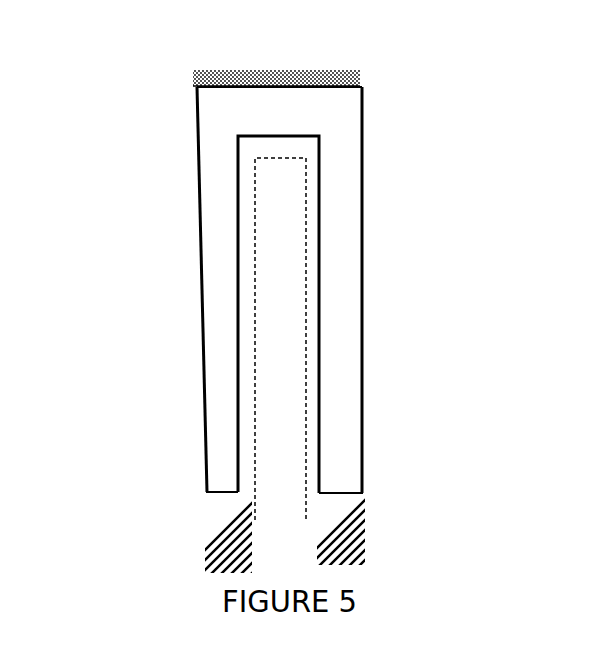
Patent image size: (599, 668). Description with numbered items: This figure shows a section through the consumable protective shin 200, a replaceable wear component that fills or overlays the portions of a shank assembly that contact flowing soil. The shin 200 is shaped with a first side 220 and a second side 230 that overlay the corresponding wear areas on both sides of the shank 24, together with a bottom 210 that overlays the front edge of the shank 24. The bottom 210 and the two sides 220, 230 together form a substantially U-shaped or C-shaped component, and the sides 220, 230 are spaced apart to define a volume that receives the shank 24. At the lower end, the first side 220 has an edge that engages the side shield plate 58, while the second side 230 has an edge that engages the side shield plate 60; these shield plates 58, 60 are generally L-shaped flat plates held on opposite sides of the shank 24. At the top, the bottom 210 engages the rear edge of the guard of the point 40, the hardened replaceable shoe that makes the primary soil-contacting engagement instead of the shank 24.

The consumable protective shin 200 is at (262, 127).
The point 40 is at (255, 72).
The bottom 210 is at (361, 86).
The first side 220 is at (195, 288).
The second side 230 is at (363, 268).
The shank 24 is at (297, 433).
The side shield plate 58 is at (205, 532).
The side shield plate 60 is at (365, 527).